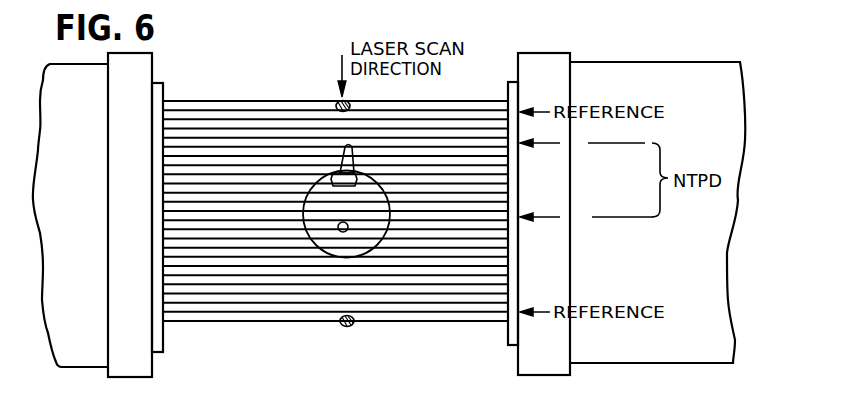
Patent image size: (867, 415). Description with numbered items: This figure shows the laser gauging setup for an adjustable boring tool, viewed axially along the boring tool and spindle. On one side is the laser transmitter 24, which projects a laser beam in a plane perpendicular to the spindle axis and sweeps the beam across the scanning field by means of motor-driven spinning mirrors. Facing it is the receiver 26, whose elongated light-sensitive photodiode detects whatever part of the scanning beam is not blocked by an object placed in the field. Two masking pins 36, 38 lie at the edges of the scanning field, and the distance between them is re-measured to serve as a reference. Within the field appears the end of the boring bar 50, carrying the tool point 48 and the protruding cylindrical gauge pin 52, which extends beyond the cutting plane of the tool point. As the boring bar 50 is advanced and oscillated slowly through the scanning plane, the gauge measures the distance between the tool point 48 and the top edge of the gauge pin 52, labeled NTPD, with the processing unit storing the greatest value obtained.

The laser transmitter 24 is at (84, 216).
The receiver 26 is at (550, 60).
The masking pin 36 is at (350, 109).
The masking pin 38 is at (353, 324).
The tool point 48 is at (354, 157).
The boring bar 50 is at (387, 190).
The gauge pin 52 is at (348, 226).